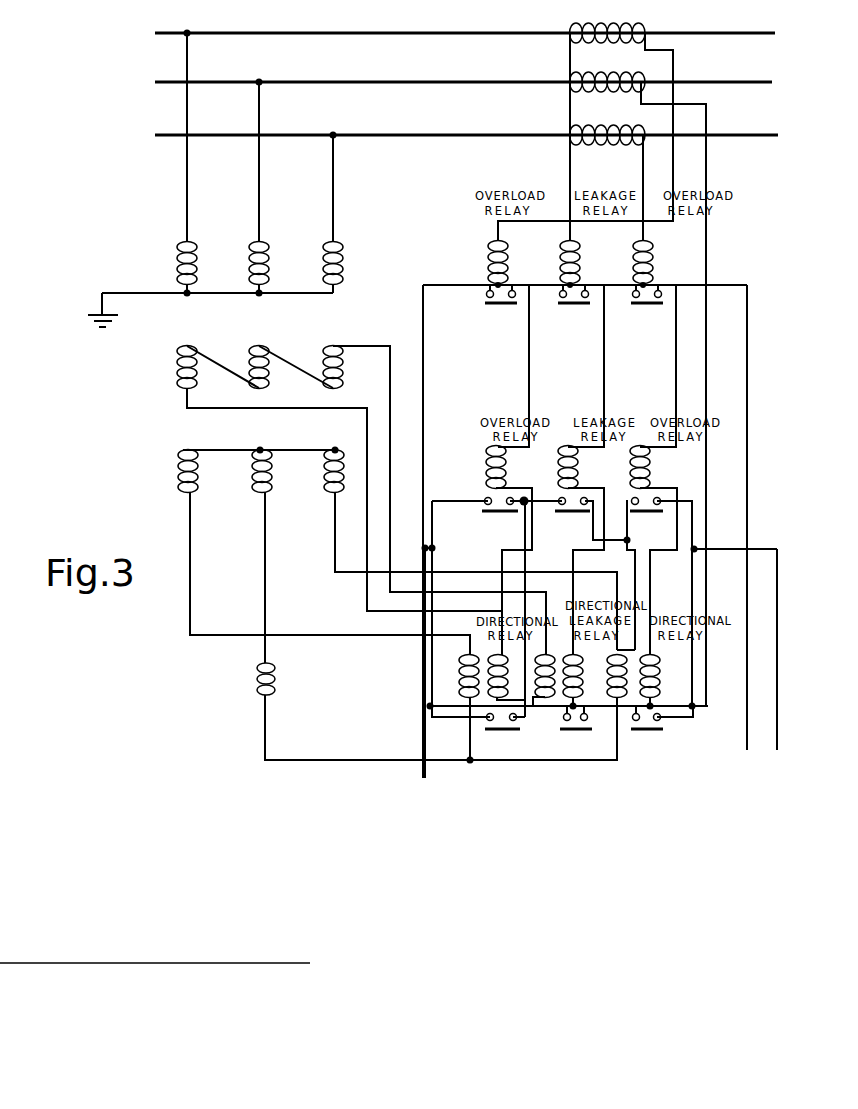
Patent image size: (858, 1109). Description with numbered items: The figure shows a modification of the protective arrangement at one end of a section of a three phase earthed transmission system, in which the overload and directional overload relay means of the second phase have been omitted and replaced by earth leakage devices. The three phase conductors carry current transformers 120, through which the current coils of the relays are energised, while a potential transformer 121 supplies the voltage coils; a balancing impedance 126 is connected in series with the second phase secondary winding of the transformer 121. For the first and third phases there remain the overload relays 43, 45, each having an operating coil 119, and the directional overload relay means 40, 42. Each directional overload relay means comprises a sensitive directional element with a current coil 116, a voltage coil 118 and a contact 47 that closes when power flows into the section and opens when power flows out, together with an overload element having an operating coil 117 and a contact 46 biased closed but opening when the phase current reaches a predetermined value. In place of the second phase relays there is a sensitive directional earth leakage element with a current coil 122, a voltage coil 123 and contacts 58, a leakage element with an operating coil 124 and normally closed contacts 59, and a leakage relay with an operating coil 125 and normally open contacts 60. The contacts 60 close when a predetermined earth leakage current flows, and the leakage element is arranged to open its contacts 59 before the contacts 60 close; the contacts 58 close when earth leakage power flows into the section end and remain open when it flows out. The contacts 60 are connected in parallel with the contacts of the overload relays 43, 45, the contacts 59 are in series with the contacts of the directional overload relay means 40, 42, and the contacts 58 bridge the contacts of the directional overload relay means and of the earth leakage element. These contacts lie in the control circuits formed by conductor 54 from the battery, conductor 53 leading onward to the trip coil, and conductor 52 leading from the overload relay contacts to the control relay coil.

The current transformers 120 is at (613, 108).
The operating coil 119 is at (661, 248).
The operating coil 125 is at (579, 256).
The overload relay 45 is at (501, 305).
The normally open contacts 60 is at (574, 305).
The overload relay 43 is at (647, 305).
The potential transformer 121 is at (232, 320).
The operating coil 117 is at (664, 468).
The operating coil 124 is at (577, 476).
The contact 46 is at (572, 516).
The normally closed contacts 59 is at (572, 516).
The directional overload relay means 42 is at (493, 570).
The directional overload relay means 40 is at (657, 570).
The conductor 52 is at (748, 583).
The conductor 54 is at (778, 618).
The conductor 53 is at (425, 665).
The voltage coil 118 is at (620, 667).
The current coil 116 is at (655, 672).
The voltage coil 123 is at (548, 668).
The current coil 122 is at (580, 675).
The contact 47 is at (574, 733).
The contacts 58 is at (576, 733).
The balancing impedance 126 is at (273, 682).